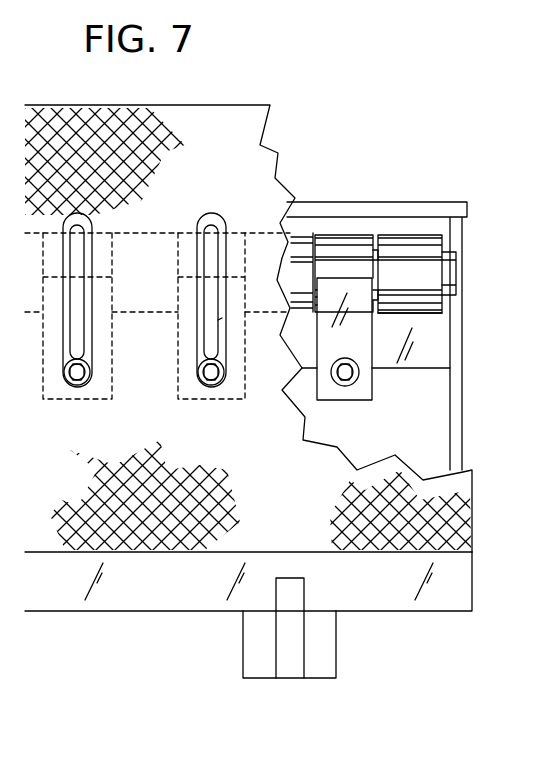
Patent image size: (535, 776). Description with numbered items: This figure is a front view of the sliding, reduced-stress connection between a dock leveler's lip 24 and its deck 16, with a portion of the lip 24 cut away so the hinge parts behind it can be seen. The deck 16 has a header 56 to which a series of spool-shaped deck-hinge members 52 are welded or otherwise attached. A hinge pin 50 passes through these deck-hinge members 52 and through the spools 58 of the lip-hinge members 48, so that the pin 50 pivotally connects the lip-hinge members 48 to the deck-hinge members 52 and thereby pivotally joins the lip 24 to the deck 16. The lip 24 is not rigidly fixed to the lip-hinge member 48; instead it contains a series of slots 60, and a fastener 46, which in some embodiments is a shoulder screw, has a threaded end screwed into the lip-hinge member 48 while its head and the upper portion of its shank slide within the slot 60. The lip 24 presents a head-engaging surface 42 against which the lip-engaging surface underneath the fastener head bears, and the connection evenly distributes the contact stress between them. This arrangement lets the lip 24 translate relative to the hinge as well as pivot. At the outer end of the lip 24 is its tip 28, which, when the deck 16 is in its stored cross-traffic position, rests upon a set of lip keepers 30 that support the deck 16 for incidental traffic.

The deck 16 is at (388, 202).
The lip 24 is at (229, 105).
The tip 28 is at (172, 612).
The lip keepers 30 is at (337, 645).
The head-engaging surface 42 is at (222, 320).
The fastener 46 is at (345, 386).
The lip-hinge member 48 is at (327, 233).
The hinge pin 50 is at (457, 272).
The deck-hinge members 52 is at (155, 233).
The header 56 is at (428, 372).
The spools 58 is at (345, 233).
The slots 60 is at (200, 328).